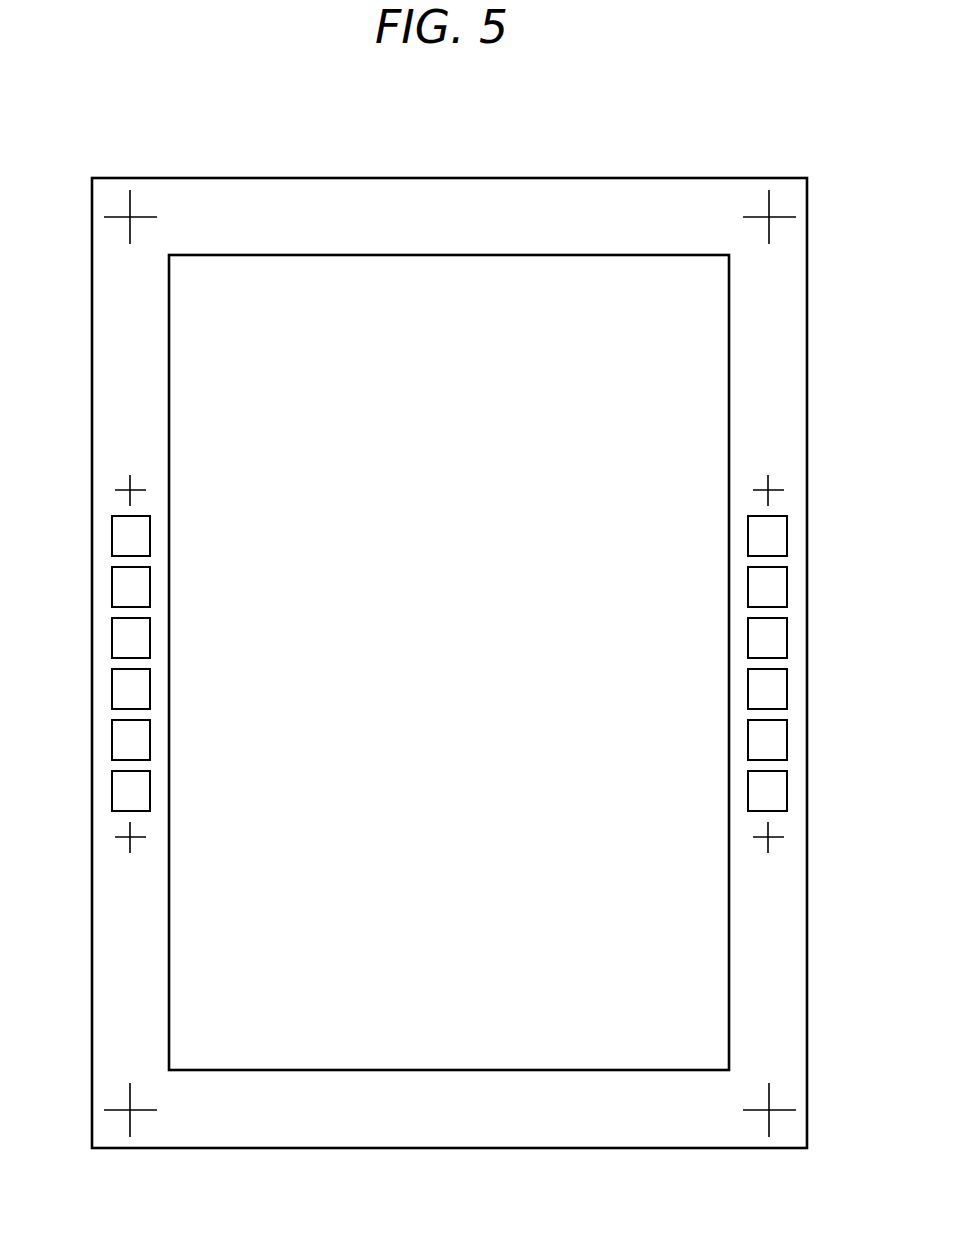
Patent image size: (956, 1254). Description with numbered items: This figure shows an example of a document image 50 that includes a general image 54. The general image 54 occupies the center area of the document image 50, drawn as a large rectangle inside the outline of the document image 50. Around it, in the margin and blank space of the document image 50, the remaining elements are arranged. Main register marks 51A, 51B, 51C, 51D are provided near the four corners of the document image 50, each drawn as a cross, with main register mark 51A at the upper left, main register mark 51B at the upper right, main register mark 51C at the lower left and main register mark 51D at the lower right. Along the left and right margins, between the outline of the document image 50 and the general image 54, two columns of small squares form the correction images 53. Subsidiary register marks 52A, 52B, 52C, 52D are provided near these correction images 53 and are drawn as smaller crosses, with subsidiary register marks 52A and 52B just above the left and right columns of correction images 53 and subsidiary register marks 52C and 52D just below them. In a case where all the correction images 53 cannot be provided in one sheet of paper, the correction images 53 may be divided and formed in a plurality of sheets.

The document image 50 is at (455, 178).
The general image 54 is at (407, 255).
The main register mark 51A is at (137, 215).
The main register mark 51B is at (777, 215).
The main register mark 51C is at (143, 1112).
The main register mark 51D is at (757, 1113).
The subsidiary register mark 52A is at (122, 485).
The subsidiary register mark 52B is at (776, 485).
The subsidiary register mark 52C is at (125, 843).
The subsidiary register mark 52D is at (773, 843).
The correction images 53 is at (112, 534).